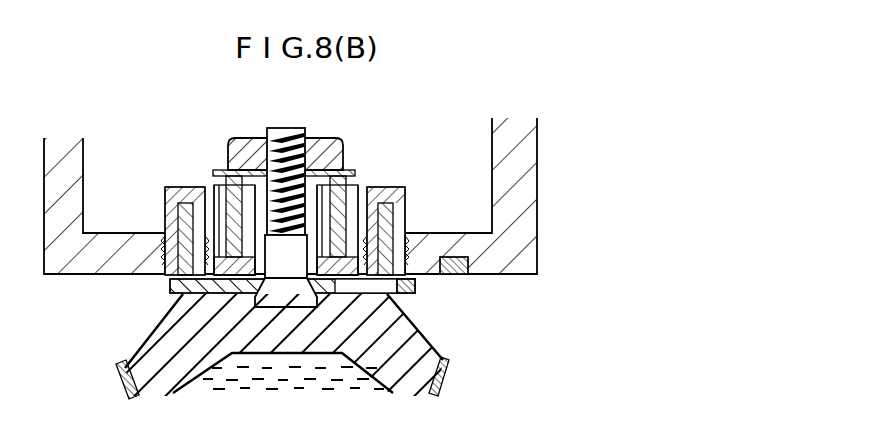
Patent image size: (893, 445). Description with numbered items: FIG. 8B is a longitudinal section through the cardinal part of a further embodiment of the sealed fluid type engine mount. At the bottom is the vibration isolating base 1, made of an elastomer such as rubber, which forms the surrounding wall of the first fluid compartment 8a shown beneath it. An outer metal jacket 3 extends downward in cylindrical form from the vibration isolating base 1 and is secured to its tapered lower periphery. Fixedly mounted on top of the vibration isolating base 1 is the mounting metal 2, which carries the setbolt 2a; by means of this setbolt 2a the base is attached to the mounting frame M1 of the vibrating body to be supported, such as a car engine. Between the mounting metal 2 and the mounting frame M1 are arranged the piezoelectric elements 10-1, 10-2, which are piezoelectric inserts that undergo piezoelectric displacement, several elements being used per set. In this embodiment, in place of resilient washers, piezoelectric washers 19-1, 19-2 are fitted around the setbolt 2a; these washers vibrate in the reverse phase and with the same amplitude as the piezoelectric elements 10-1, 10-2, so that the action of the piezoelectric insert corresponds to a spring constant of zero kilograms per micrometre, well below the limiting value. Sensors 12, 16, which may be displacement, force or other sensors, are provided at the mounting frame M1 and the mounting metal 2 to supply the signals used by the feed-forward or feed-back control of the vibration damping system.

The vibration isolating base 1 is at (301, 345).
The mounting metal 2 is at (170, 286).
The setbolt 2a is at (297, 145).
The outer metal jacket 3 is at (120, 368).
The first fluid compartment 8a is at (213, 388).
The piezoelectric element 10-1 is at (397, 206).
The piezoelectric element 10-2 is at (165, 202).
The sensor 12 is at (466, 274).
The sensor 16 is at (415, 288).
The piezoelectric washer 19-1 is at (350, 189).
The piezoelectric washer 19-2 is at (229, 176).
The mounting frame M1 is at (520, 157).